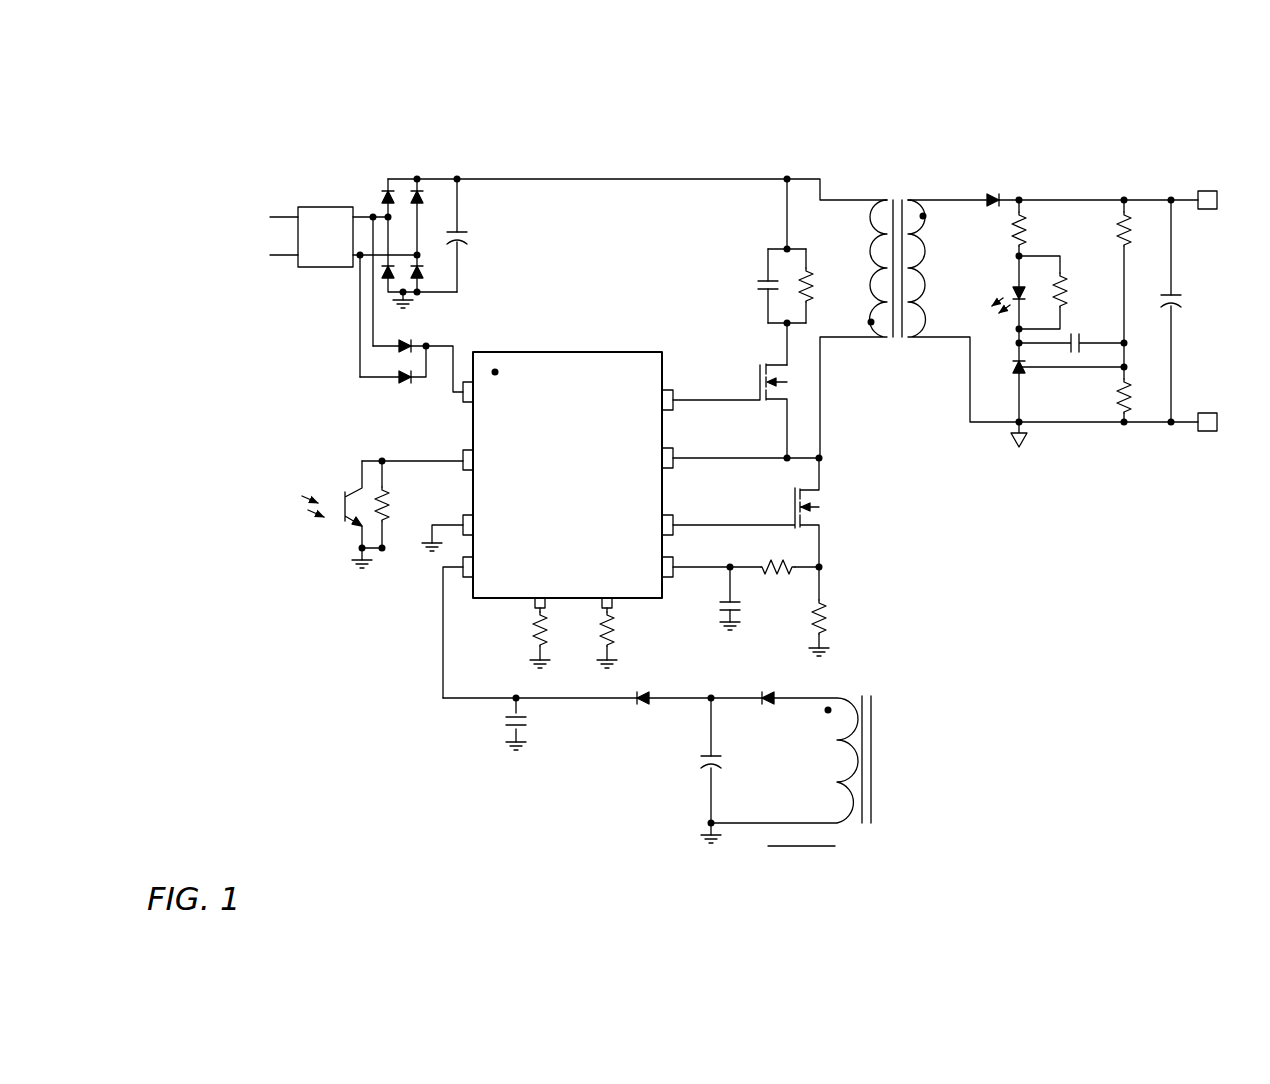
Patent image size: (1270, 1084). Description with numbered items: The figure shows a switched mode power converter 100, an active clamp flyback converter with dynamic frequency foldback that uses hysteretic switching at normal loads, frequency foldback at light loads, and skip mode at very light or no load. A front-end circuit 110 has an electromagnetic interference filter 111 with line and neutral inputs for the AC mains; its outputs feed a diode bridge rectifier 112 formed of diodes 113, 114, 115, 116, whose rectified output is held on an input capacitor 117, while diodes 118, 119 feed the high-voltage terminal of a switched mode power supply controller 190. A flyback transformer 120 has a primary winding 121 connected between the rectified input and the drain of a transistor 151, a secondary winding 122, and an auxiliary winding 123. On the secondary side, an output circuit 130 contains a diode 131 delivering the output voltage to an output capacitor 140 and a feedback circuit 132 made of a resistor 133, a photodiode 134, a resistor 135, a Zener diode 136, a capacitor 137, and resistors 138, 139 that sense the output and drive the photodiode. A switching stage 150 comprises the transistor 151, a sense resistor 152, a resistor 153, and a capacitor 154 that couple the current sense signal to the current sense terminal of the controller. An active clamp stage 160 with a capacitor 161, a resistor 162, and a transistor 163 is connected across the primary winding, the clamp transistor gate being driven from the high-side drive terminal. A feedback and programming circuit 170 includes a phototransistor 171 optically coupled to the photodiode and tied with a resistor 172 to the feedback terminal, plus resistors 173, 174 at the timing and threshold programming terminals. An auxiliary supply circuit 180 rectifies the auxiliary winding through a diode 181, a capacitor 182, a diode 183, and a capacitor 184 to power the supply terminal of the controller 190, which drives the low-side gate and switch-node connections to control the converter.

The switched mode power converter 100 is at (292, 727).
The front-end circuit 110 is at (283, 175).
The electromagnetic interference (EMI) filter 111 is at (337, 207).
The diode bridge rectifier 112 is at (405, 167).
The diode 113 is at (388, 196).
The diode 114 is at (385, 275).
The diode 115 is at (419, 198).
The diode 116 is at (433, 270).
The input capacitor 117 is at (462, 242).
The diode 118 is at (412, 343).
The diode 119 is at (400, 383).
The flyback transformer 120 is at (878, 168).
The primary winding 121 is at (850, 340).
The secondary winding 122 is at (928, 340).
The auxiliary winding 123 is at (845, 824).
The output circuit 130 is at (958, 185).
The diode 131 is at (997, 197).
The feedback circuit 132 is at (1068, 185).
The resistor 133 is at (1012, 228).
The photodiode 134 is at (1013, 288).
The resistor 135 is at (1064, 280).
The Zener diode 136 is at (1015, 370).
The capacitor 137 is at (1068, 352).
The resistor 138 is at (1129, 240).
The resistor 139 is at (1130, 382).
The output capacitor 140 is at (1178, 307).
The switching stage 150 is at (865, 496).
The transistor 151 is at (806, 486).
The resistor 152 is at (823, 603).
The resistor 153 is at (766, 560).
The capacitor 154 is at (722, 613).
The active clamp stage 160 is at (757, 247).
The capacitor 161 is at (765, 290).
The resistor 162 is at (810, 285).
The transistor 163 is at (770, 363).
The feedback and programming circuit 170 is at (298, 492).
The phototransistor 171 is at (353, 522).
The resistor 172 is at (386, 522).
The resistor 173 is at (535, 630).
The resistor 174 is at (600, 630).
The auxiliary supply circuit 180 is at (540, 778).
The diode 181 is at (773, 694).
The capacitor 182 is at (703, 757).
The diode 183 is at (648, 694).
The capacitor 184 is at (508, 718).
The switched mode power supply controller 190 is at (525, 352).